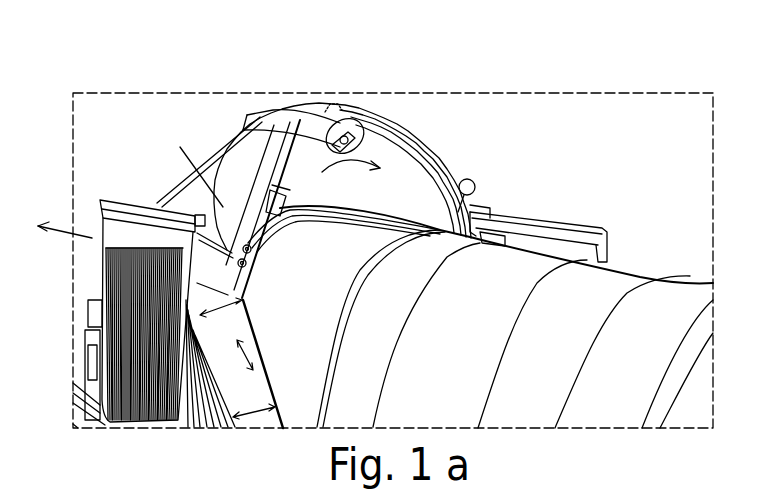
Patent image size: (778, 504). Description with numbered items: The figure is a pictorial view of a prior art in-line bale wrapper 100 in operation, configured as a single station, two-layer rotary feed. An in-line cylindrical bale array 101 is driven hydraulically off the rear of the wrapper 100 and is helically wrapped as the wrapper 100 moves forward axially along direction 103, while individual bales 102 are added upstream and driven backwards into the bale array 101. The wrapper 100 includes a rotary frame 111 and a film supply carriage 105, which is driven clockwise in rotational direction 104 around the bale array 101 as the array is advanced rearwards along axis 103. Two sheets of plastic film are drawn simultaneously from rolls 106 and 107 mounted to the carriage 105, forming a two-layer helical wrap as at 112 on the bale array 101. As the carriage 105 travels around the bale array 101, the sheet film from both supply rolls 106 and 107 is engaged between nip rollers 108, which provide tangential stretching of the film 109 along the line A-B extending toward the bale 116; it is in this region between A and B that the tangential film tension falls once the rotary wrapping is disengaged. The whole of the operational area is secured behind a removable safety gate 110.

The wrapper 100 is at (560, 117).
The bale array 101 is at (639, 270).
The individual bale 102 is at (405, 200).
The axial direction 103 is at (59, 218).
The rotational direction 104 is at (410, 122).
The film supply carriage 105 is at (341, 112).
The film roll 106 is at (273, 110).
The film roll 107 is at (228, 178).
The nip rollers 108 is at (228, 195).
The film 109 is at (255, 390).
The removable safety gate 110 is at (133, 195).
The rotary frame 111 is at (367, 158).
The two-layer helical wrap 112 is at (527, 268).
The bale 116 is at (268, 350).